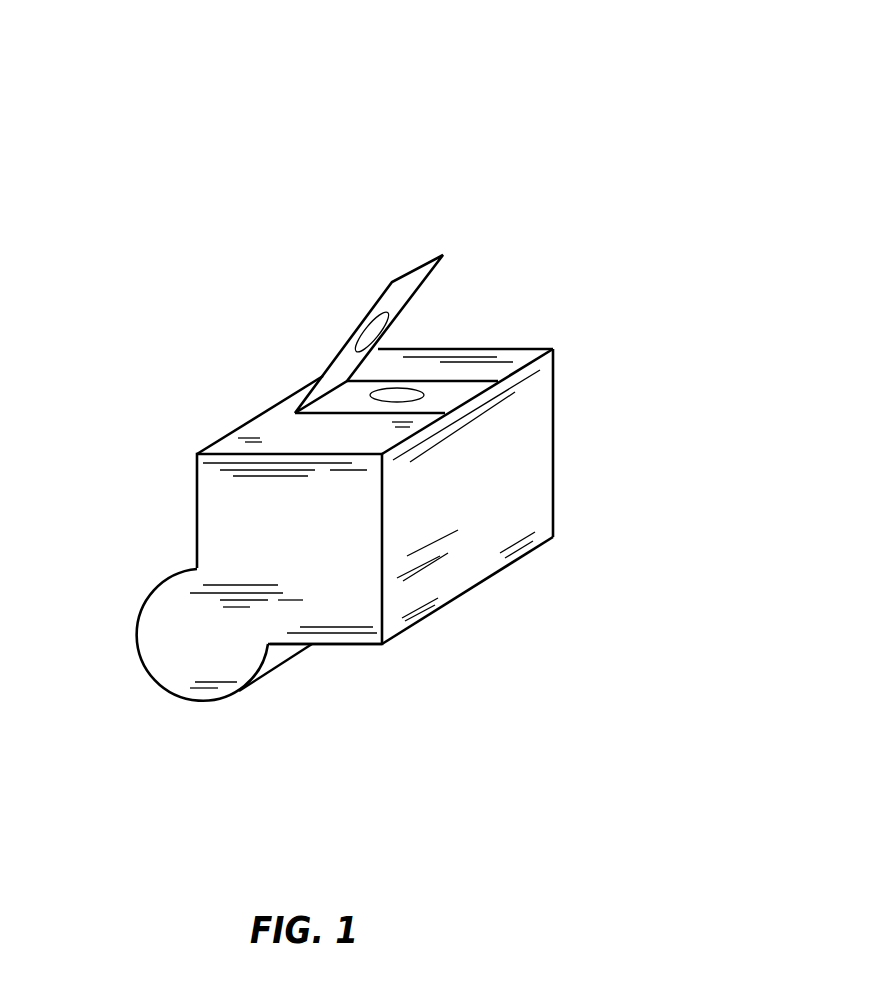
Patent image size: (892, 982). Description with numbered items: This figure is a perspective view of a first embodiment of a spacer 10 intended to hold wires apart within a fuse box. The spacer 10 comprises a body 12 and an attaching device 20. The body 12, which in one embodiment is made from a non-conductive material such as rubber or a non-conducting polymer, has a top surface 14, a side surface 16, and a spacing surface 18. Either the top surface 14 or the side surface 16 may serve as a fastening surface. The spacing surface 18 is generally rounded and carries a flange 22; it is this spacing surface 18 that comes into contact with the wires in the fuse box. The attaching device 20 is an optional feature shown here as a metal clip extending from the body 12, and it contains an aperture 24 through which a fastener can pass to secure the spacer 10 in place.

The spacer 10 is at (500, 118).
The body 12 is at (600, 423).
The top surface 14 is at (327, 449).
The side surface 16 is at (499, 498).
The spacing surface 18 is at (337, 678).
The attaching device 20 is at (368, 267).
The flange 22 is at (172, 647).
The aperture 24 is at (373, 332).